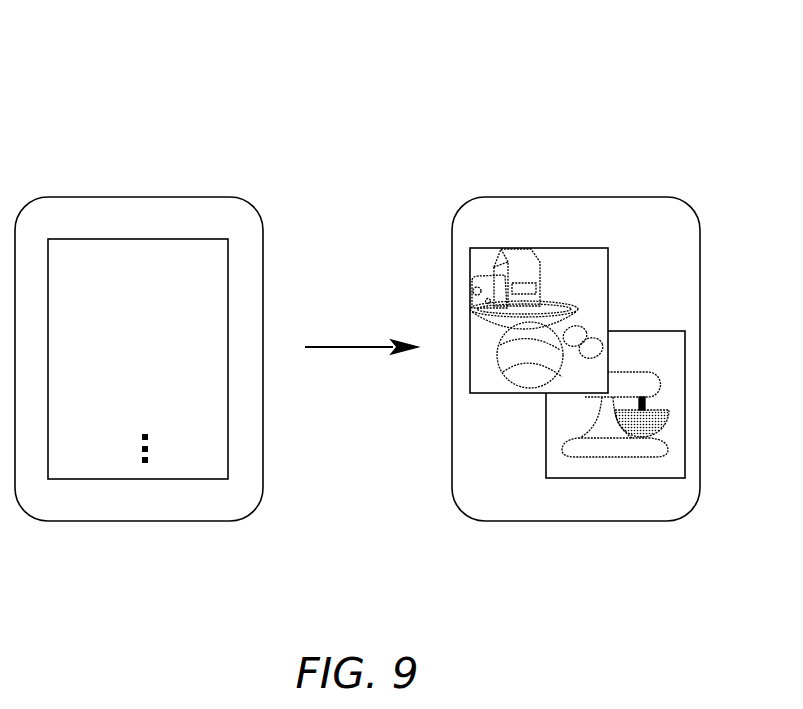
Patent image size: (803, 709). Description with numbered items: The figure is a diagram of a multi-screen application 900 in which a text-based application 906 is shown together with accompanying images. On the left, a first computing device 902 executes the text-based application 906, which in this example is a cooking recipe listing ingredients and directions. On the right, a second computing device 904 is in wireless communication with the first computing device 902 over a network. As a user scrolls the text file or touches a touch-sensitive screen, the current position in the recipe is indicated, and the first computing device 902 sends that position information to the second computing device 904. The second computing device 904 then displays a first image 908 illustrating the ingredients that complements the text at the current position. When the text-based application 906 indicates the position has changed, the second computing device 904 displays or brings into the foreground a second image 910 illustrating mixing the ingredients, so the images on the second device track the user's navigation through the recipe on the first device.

The multi-screen application 900 is at (751, 38).
The first computing device 902 is at (208, 197).
The second computing device 904 is at (656, 197).
The text-based application 906 is at (158, 239).
The first image 908 is at (571, 248).
The second image 910 is at (608, 478).